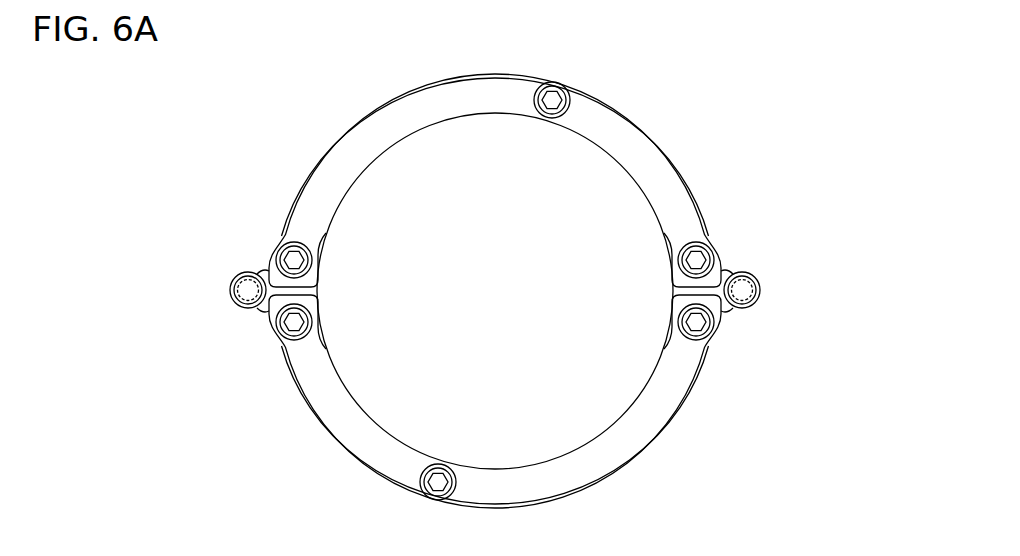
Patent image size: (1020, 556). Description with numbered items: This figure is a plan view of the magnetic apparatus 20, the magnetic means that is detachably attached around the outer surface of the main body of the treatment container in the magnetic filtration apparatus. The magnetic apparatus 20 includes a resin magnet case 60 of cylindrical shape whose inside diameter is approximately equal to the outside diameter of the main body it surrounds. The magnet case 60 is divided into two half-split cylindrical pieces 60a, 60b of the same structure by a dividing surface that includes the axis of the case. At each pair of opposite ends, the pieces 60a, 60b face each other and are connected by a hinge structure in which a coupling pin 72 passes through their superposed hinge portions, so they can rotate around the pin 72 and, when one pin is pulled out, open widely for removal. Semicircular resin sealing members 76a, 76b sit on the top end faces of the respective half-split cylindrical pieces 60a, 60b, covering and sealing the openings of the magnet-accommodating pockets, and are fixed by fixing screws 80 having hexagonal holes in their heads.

The magnetic apparatus 20 is at (690, 98).
The magnet case 60 is at (868, 215).
The half-split cylindrical piece 60a is at (716, 222).
The half-split cylindrical piece 60b is at (716, 362).
The coupling pin 72 is at (248, 290).
The sealing member 76a is at (398, 115).
The sealing member 76b is at (367, 445).
The fixing screw 80 is at (552, 99).